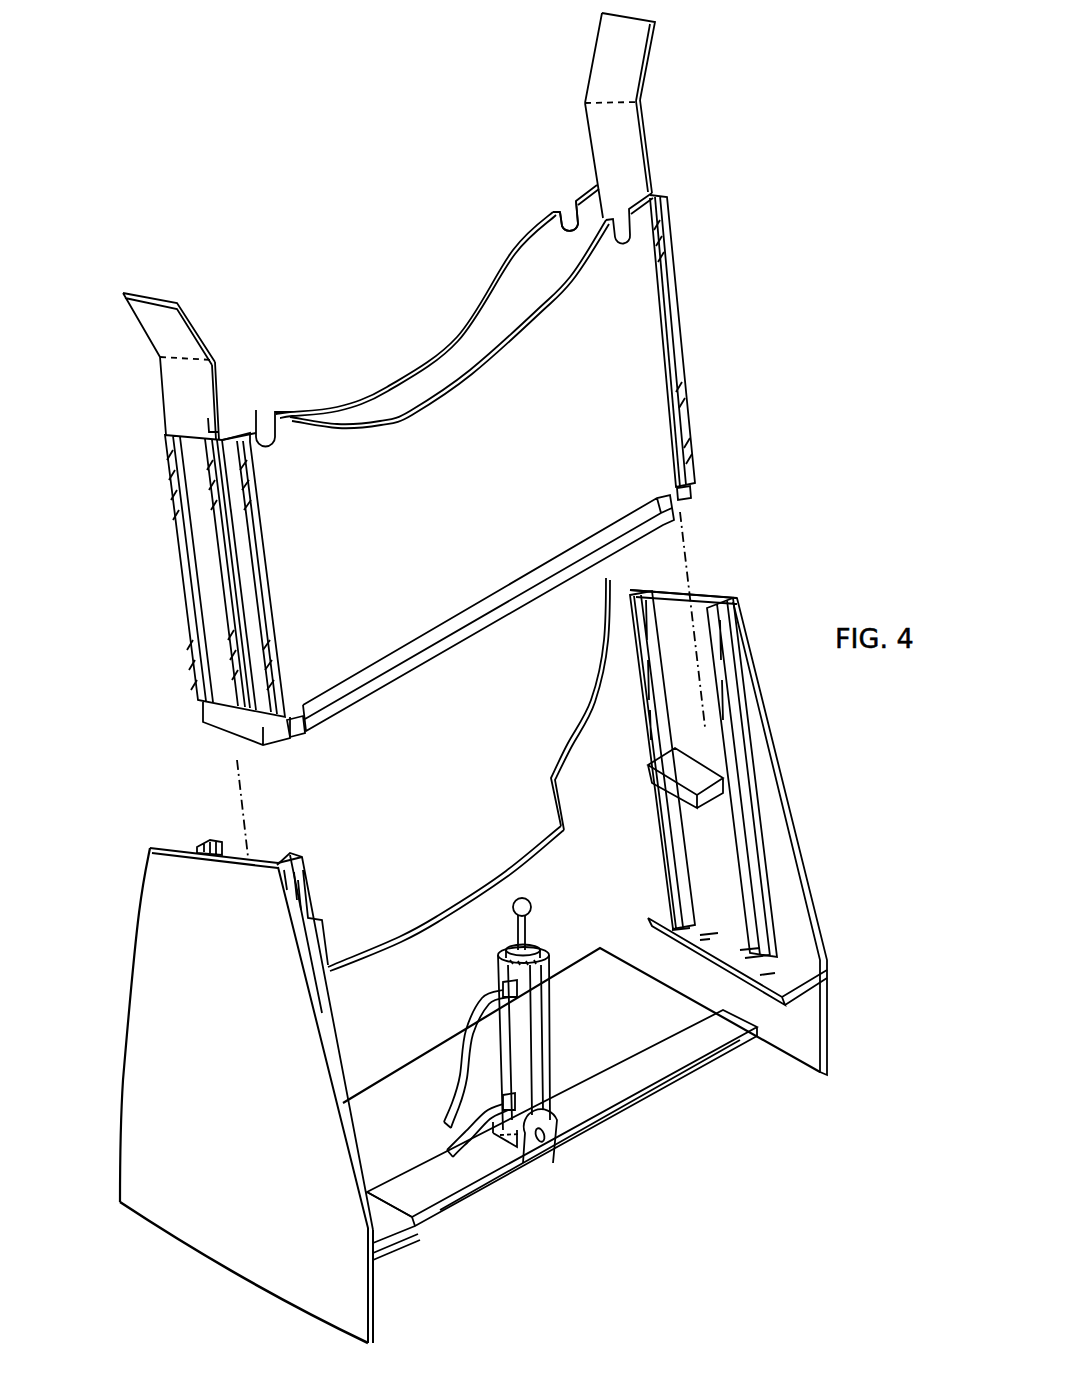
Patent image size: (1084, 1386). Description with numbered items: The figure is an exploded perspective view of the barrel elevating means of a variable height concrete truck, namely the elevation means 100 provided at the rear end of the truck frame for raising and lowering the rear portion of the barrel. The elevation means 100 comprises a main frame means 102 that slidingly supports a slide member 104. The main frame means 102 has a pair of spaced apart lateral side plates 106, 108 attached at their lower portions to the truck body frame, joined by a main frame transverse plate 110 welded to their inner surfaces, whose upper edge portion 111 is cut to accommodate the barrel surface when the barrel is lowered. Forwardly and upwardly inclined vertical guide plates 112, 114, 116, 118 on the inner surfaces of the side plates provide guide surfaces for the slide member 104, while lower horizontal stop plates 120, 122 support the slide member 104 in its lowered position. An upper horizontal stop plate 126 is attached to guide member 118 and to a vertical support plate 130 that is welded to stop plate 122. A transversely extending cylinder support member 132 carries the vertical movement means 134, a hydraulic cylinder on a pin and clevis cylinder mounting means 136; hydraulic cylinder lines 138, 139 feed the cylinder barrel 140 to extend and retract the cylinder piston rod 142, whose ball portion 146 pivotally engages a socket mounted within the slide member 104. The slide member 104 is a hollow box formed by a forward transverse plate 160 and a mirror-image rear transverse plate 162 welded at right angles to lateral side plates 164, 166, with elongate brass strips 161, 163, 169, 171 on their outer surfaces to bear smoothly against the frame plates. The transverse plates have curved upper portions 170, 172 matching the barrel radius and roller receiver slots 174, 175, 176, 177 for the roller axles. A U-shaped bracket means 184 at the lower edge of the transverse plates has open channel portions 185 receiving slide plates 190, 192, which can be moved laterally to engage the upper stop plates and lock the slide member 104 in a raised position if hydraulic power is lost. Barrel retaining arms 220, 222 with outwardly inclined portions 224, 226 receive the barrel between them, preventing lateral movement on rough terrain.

The elevation means 100 is at (157, 700).
The main frame means 102 is at (823, 578).
The slide member 104 is at (742, 217).
The main frame lateral side plate 106 is at (147, 992).
The main frame lateral side plate 108 is at (775, 833).
The main frame transverse plate 110 is at (483, 920).
The upper edge portion 111 is at (573, 750).
The vertical guide plate 112 is at (280, 857).
The vertical guide plate 114 is at (210, 843).
The vertical guide plate 116 is at (727, 597).
The vertical guide plate 118 is at (640, 593).
The lower horizontal stop plate 120 is at (383, 1222).
The lower horizontal stop plate 122 is at (793, 980).
The upper horizontal stop plate 126 is at (703, 773).
The vertical support plate 130 is at (717, 882).
The cylinder support member 132 is at (653, 1077).
The vertical movement means 134 is at (548, 1082).
The cylinder mounting means 136 is at (538, 1150).
The hydraulic cylinder line 138 is at (450, 1107).
The hydraulic cylinder line 139 is at (457, 1152).
The cylinder barrel 140 is at (538, 1010).
The cylinder piston rod 142 is at (525, 932).
The ball portion 146 is at (531, 907).
The forward transverse plate 160 is at (457, 353).
The elongate brass strip 161 is at (233, 637).
The rear transverse plate 162 is at (513, 360).
The elongate brass strip 163 is at (207, 630).
The lateral side plate 164 is at (207, 528).
The lateral side plate 166 is at (673, 273).
The elongate brass strip 169 is at (260, 573).
The curved upper portion 170 is at (413, 372).
The elongate brass strip 171 is at (665, 391).
The curved upper portion 172 is at (385, 420).
The roller receiver slot 174 is at (216, 425).
The roller receiver slot 175 is at (263, 410).
The roller receiver slot 176 is at (568, 213).
The roller receiver slot 177 is at (617, 214).
The U-shaped bracket means 184 is at (358, 704).
The open channel portion 185 is at (303, 733).
The slide plate 190 is at (273, 737).
The slide plate 192 is at (693, 495).
The barrel retaining arm 220 is at (173, 407).
The barrel retaining arm 222 is at (628, 137).
The outwardly inclined portion 224 is at (158, 337).
The outwardly inclined portion 226 is at (633, 50).